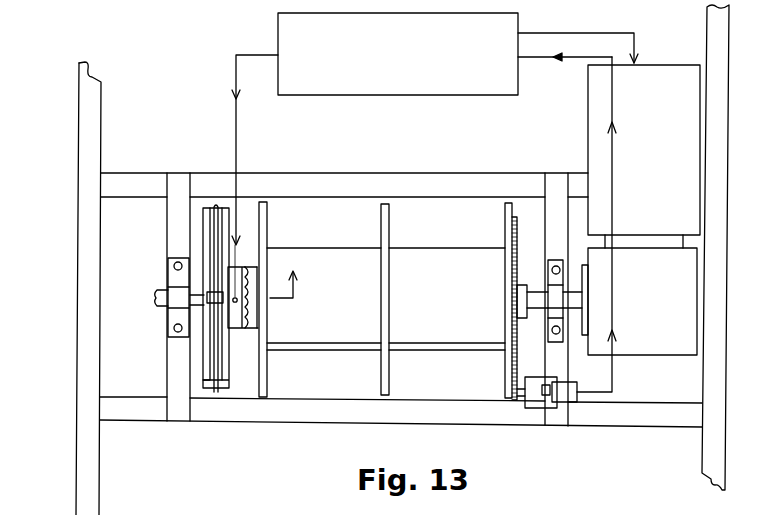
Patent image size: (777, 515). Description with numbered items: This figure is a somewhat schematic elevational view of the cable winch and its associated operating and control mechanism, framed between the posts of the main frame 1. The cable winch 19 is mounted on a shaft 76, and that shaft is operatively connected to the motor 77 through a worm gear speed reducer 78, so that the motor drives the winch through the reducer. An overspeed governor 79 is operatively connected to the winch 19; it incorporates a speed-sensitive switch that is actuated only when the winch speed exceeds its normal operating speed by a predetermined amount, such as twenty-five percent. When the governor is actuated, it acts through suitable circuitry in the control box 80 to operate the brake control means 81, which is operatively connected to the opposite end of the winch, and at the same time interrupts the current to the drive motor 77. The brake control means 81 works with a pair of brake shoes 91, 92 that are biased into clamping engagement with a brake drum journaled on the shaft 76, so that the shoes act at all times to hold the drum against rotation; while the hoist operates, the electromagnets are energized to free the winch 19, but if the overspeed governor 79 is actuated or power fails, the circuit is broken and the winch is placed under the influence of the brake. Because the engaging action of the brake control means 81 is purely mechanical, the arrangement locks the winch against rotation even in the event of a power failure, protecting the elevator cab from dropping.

The machine frame post 1 is at (86, 142).
The cable winch 19 is at (415, 257).
The shaft 76 is at (536, 298).
The motor 77 is at (647, 77).
The worm gear speed reducer 78 is at (653, 348).
The overspeed governor 79 is at (532, 403).
The control box 80 is at (376, 85).
The brake control means 81 is at (233, 333).
The brake shoe 91 is at (226, 388).
The brake shoe 92 is at (207, 215).